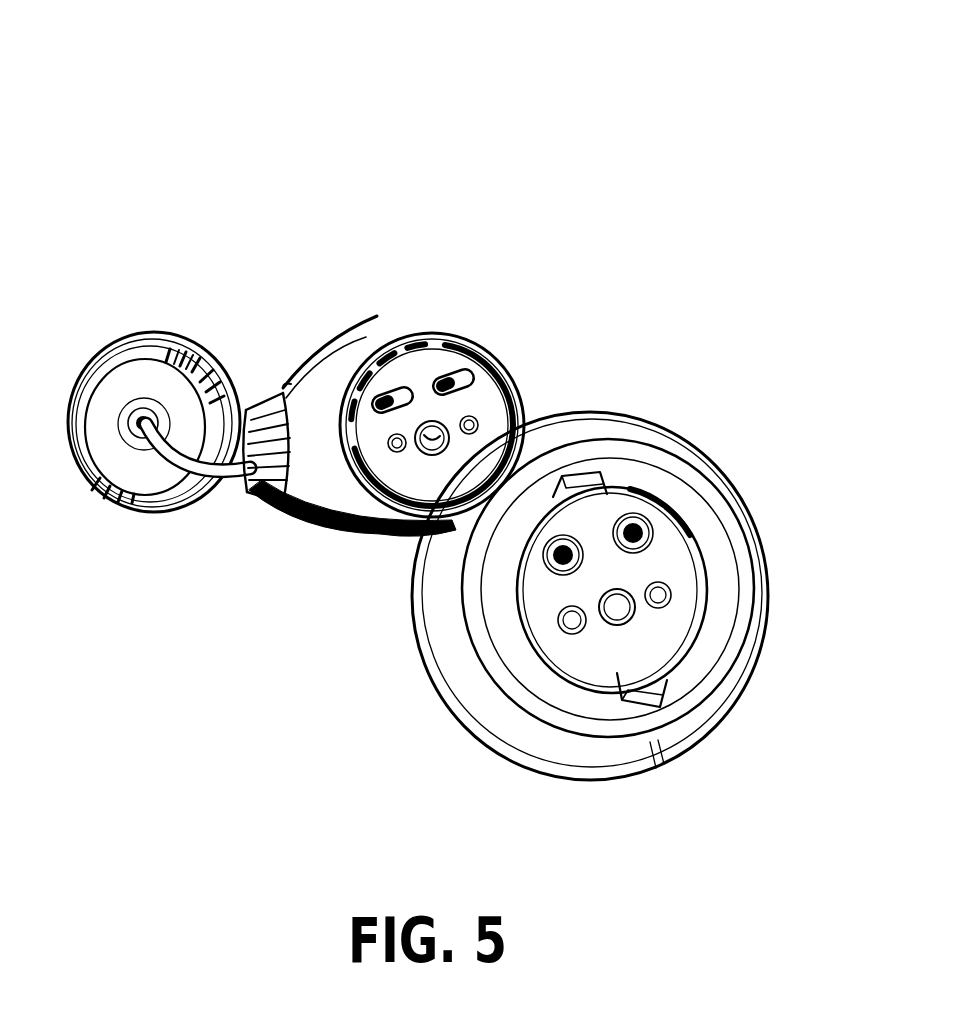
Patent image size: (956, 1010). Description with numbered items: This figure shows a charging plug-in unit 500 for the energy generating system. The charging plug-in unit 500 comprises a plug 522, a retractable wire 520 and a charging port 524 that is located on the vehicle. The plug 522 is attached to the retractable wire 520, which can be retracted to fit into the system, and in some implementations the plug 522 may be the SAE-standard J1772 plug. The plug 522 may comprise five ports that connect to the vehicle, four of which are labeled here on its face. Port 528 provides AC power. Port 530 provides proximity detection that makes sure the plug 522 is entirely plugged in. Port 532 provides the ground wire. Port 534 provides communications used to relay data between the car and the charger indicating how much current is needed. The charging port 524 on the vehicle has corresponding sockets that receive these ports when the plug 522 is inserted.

The charging plug-in unit 500 is at (273, 146).
The retractable wire 520 is at (230, 470).
The plug 522 is at (437, 472).
The charging port 524 is at (670, 633).
The port 528 is at (460, 376).
The port 530 is at (466, 418).
The port 532 is at (447, 441).
The port 534 is at (394, 454).